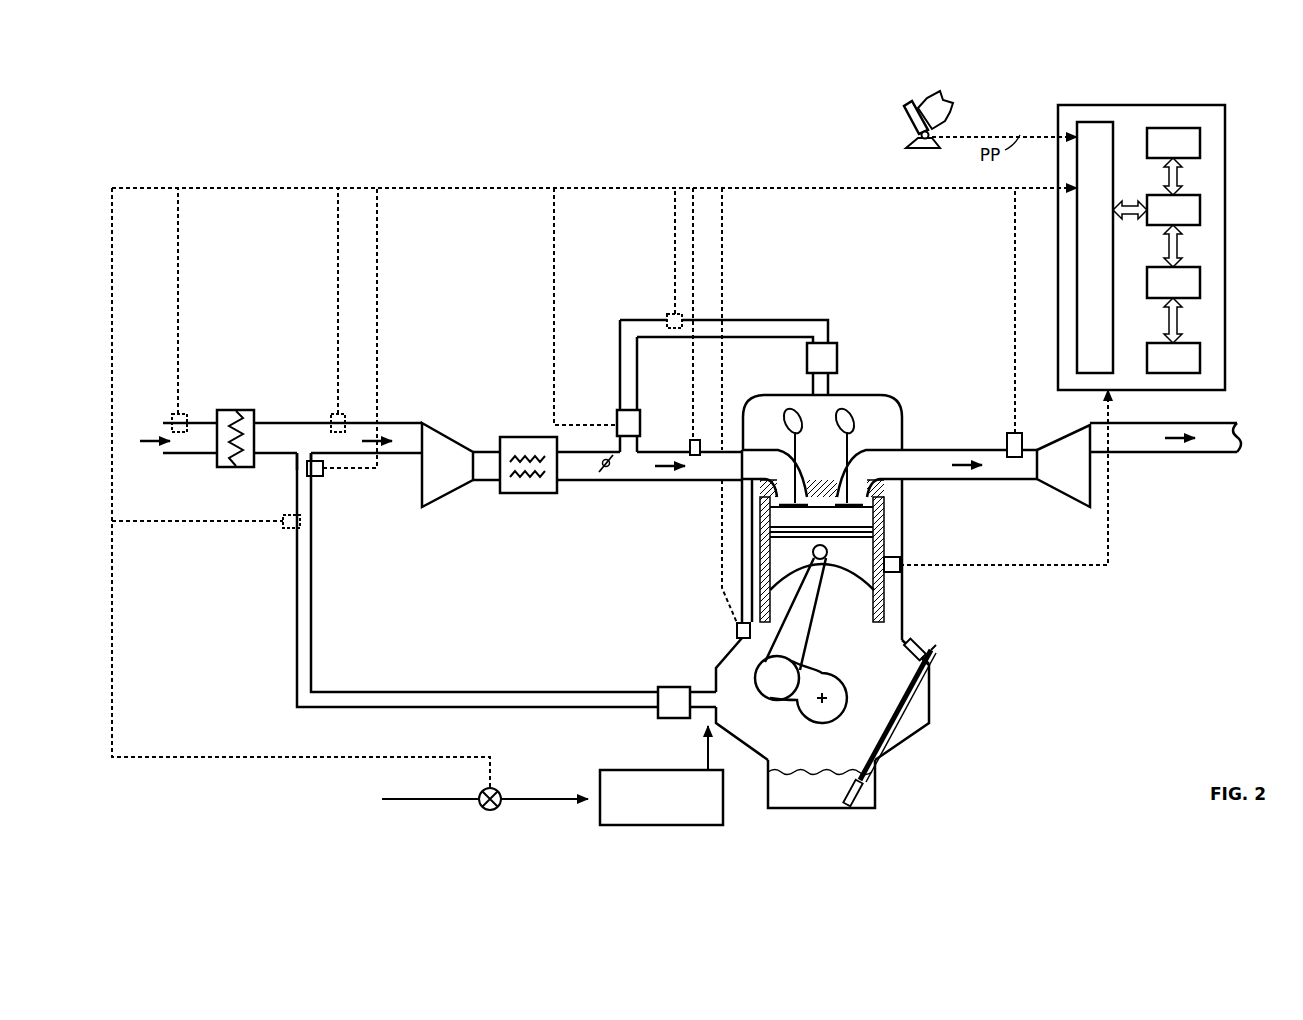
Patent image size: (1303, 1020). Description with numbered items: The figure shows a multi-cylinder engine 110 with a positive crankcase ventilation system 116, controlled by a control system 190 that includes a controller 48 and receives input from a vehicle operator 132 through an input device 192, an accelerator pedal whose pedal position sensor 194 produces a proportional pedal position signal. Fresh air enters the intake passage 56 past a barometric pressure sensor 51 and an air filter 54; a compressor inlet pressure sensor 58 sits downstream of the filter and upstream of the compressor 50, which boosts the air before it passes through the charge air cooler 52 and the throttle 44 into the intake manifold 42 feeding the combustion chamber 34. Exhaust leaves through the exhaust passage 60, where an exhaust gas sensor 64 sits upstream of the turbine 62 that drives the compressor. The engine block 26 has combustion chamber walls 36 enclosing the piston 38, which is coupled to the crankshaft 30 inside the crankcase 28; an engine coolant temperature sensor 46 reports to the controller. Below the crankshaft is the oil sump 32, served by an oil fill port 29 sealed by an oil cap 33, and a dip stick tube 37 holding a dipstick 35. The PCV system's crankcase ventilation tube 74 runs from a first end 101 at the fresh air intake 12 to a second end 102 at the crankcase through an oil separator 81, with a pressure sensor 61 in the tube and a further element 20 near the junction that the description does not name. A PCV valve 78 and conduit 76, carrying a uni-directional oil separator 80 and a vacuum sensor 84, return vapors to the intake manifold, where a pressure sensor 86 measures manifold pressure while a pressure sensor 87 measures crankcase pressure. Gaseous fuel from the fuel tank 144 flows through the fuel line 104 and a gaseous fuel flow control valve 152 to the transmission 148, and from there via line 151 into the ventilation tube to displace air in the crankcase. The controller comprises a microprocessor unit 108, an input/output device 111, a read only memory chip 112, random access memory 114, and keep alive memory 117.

The engine 110 is at (332, 146).
The fresh air intake 12 is at (404, 457).
The intake passage 56 is at (143, 441).
The barometric pressure sensor 51 is at (178, 412).
The air filter 54 is at (244, 422).
The compressor inlet pressure sensor 58 is at (338, 413).
The first end 101 is at (292, 457).
The valve 20 is at (324, 470).
The pressure sensor 61 is at (300, 522).
The crankcase ventilation tube 74 is at (395, 692).
The oil separator 81 is at (687, 702).
The compressor 50 is at (447, 465).
The intake manifold 42 is at (575, 560).
The charge air cooler 52 is at (546, 437).
The throttle 44 is at (608, 468).
The PCV valve 78 is at (617, 420).
The conduit 76 is at (620, 320).
The vacuum sensor 84 is at (672, 314).
The pressure sensor 86 is at (693, 440).
The positive crankcase ventilation system 116 is at (757, 303).
The uni-directional oil separator 80 is at (837, 350).
The pressure sensor 87 is at (737, 630).
The combustion chamber 34 is at (827, 520).
The combustion chamber walls 36 is at (880, 532).
The piston 38 is at (822, 548).
The engine coolant temperature sensor 46 is at (902, 570).
The crankshaft 30 is at (776, 681).
The second end 102 is at (712, 678).
The crankcase 28 is at (931, 672).
The engine block 26 is at (962, 748).
The oil sump 32 is at (876, 795).
The oil fill port 29 is at (905, 645).
The oil cap 33 is at (926, 648).
The dip stick tube 37 is at (900, 690).
The dipstick 35 is at (937, 655).
The line 151 is at (706, 748).
The transmission 148 is at (661, 797).
The gaseous fuel flow control valve 152 is at (498, 790).
The fuel line 104 is at (432, 798).
The fuel tank 144 is at (317, 797).
The exhaust passage 60 is at (955, 450).
The exhaust gas sensor 64 is at (1022, 440).
The turbine 62 is at (1139, 465).
The controller 48 is at (1170, 105).
The input/output device 111 is at (1100, 128).
The read only memory chip 112 is at (1200, 142).
The microprocessor unit 108 is at (1200, 207).
The random access memory 114 is at (1200, 280).
The keep alive memory 117 is at (1200, 355).
The control system 190 is at (1228, 82).
The vehicle operator 132 is at (950, 103).
The input device 192 is at (905, 122).
The pedal position sensor 194 is at (920, 135).